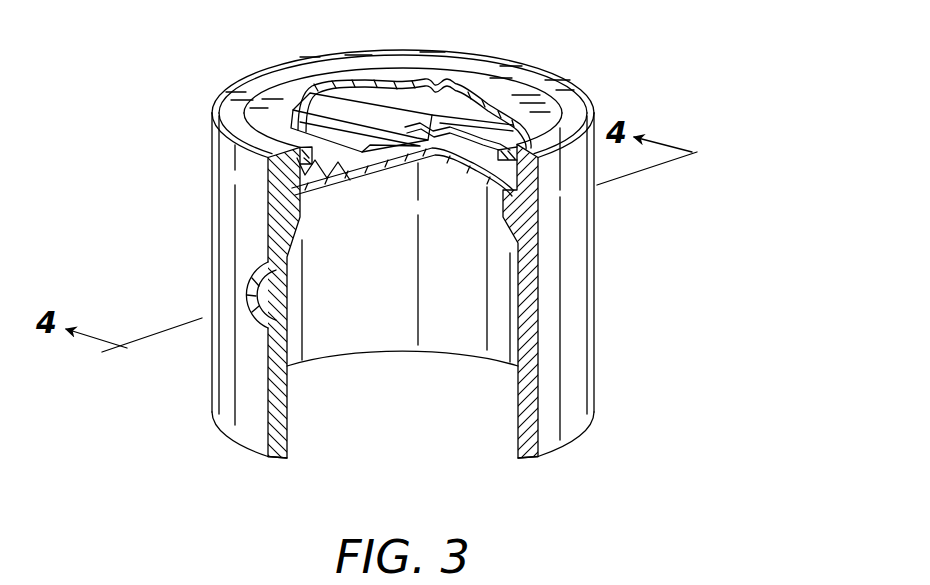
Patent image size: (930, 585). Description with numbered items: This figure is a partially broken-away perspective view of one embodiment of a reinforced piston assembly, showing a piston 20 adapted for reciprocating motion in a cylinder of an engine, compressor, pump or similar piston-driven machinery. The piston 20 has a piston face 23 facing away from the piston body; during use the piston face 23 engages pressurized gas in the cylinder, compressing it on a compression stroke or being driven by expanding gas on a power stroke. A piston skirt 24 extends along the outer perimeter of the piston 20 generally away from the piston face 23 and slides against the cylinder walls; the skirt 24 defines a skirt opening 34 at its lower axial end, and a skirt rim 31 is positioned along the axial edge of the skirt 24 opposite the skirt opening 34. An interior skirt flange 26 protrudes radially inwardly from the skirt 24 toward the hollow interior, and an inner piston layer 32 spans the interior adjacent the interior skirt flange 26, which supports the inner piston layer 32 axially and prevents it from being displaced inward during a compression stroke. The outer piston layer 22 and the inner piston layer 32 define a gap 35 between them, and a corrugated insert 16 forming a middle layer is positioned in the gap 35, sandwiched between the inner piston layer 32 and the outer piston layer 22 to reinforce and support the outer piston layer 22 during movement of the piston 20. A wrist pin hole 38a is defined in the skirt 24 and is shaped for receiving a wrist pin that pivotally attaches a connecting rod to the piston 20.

The piston 20 is at (405, 256).
The corrugated insert 16 is at (353, 108).
The outer piston layer 22 is at (468, 80).
The piston face 23 is at (407, 68).
The skirt rim 31 is at (548, 78).
The inner piston layer 32 is at (334, 176).
The gap 35 is at (452, 116).
The interior skirt flange 26 is at (296, 222).
The wrist pin hole 38a is at (259, 302).
The piston skirt 24 is at (277, 456).
The skirt opening 34 is at (391, 436).